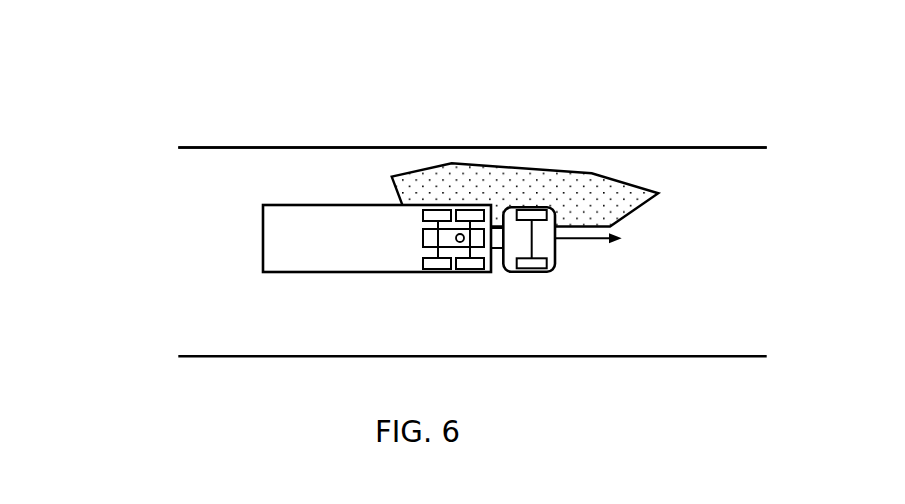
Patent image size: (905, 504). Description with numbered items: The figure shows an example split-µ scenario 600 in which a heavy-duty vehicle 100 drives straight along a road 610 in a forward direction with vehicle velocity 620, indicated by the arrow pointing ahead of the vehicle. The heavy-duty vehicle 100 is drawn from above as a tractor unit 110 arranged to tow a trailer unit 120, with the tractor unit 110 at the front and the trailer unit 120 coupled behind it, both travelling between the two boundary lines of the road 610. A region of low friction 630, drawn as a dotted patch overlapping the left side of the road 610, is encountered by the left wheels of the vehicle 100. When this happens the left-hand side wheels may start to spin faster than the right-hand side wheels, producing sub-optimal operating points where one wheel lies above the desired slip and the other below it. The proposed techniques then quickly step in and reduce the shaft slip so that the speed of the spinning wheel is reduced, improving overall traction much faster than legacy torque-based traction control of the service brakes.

The split-µ scenario 600 is at (128, 66).
The road 610 is at (568, 145).
The vehicle velocity 620 is at (594, 251).
The region of low friction 630 is at (647, 198).
The heavy-duty vehicle 100 is at (450, 276).
The tractor unit 110 is at (513, 272).
The trailer unit 120 is at (315, 272).